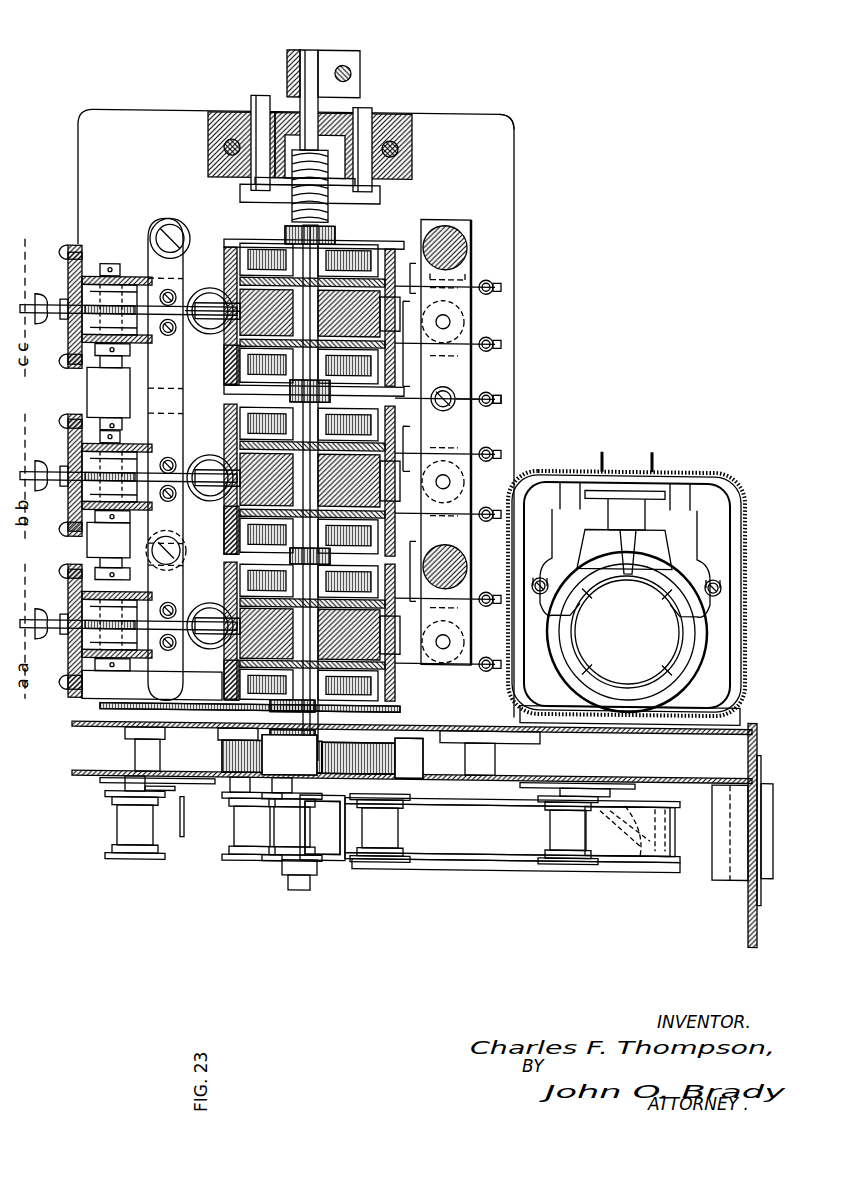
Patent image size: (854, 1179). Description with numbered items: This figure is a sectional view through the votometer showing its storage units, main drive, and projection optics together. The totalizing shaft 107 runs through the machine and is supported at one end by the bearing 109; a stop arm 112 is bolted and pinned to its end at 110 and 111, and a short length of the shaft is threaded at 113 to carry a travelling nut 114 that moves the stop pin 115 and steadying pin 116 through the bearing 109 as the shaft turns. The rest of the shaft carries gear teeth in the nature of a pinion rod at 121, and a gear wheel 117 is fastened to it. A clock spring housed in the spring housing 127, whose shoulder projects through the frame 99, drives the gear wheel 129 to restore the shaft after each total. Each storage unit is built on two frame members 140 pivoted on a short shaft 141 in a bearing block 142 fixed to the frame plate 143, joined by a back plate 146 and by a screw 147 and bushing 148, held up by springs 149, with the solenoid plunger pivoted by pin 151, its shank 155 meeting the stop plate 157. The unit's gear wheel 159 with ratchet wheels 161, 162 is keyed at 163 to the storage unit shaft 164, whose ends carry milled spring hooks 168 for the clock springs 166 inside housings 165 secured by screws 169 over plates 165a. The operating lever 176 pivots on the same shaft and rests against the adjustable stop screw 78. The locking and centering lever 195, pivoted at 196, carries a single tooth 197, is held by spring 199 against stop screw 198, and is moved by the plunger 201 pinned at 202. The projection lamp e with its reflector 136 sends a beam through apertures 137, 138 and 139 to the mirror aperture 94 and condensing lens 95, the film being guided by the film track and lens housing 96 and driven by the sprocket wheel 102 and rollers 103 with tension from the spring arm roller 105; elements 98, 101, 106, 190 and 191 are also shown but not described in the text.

The adjustable stop screw 78 is at (45, 617).
The mirror-covered aperture 94 is at (630, 838).
The condensing lens 95 is at (640, 858).
The film track and lens housing 96 is at (500, 870).
The bracket plate 98 is at (560, 784).
The frame 99 is at (85, 730).
The carriage frame 101 is at (545, 828).
The sprocket wheel 102 is at (322, 860).
The rollers 103 is at (265, 858).
The spring arm roller 105 is at (95, 785).
The screw head 106 is at (150, 252).
The totalizing shaft 107 is at (303, 890).
The bearing 109 is at (208, 133).
The bolt 110 is at (345, 66).
The pin 111 is at (309, 75).
The stop arm 112 is at (322, 52).
The threaded portion 113 is at (330, 214).
The travelling nut 114 is at (380, 196).
The stop pin 115 is at (251, 98).
The steadying pin 116 is at (370, 108).
The gear wheel 117 is at (400, 712).
The pinion rod gear teeth 121 is at (285, 236).
The spring housing 127 is at (222, 758).
The gear wheel 129 is at (440, 752).
The reflector 136 is at (642, 552).
The aperture 137 is at (655, 718).
The aperture 138 is at (630, 732).
The aperture 139 is at (605, 770).
The frame member 140 is at (148, 254).
The short shaft 141 is at (150, 554).
The bearing block 142 is at (68, 442).
The frame plate 143 is at (516, 123).
The back plate 146 is at (45, 282).
The screw 147 is at (431, 259).
The bushing 148 is at (431, 571).
The springs 149 is at (498, 338).
The pin 151 is at (460, 270).
The shank 155 is at (500, 300).
The stop plate 157 is at (452, 220).
The gear wheel 159 is at (215, 322).
The ratchet wheel 161 is at (240, 325).
The ratchet wheel 162 is at (200, 318).
The key 163 is at (296, 545).
The storage unit shaft 164 is at (296, 690).
The spring housing 165 is at (228, 360).
The plate 165a is at (230, 692).
The clock spring 166 is at (230, 518).
The milled spring hook 168 is at (296, 360).
The screws 169 is at (232, 258).
The operating lever 176 is at (200, 460).
The bracket 190 is at (160, 672).
The ring 191 is at (176, 575).
The locking and centering lever 195 is at (500, 395).
The pivot 196 is at (100, 378).
The single tooth 197 is at (285, 392).
The adjustable stop screw 198 is at (455, 392).
The spring 199 is at (500, 402).
The plunger 201 is at (408, 448).
The pin 202 is at (408, 343).
The projection lamp e is at (575, 628).